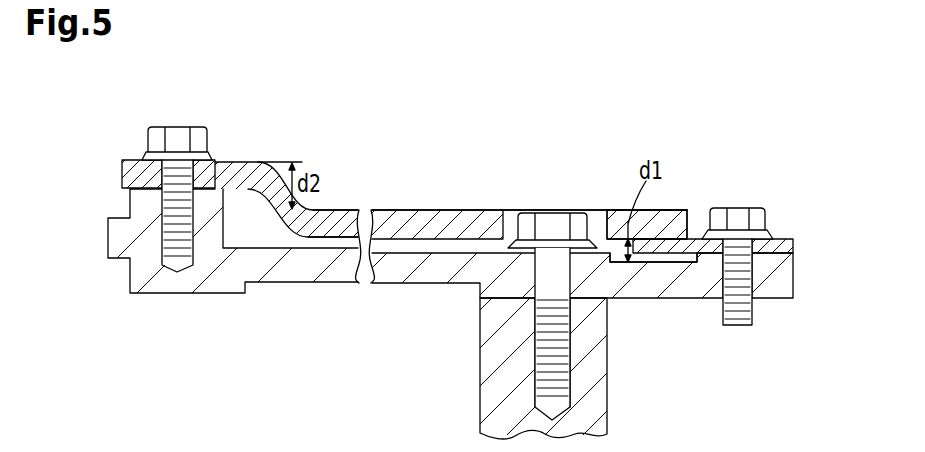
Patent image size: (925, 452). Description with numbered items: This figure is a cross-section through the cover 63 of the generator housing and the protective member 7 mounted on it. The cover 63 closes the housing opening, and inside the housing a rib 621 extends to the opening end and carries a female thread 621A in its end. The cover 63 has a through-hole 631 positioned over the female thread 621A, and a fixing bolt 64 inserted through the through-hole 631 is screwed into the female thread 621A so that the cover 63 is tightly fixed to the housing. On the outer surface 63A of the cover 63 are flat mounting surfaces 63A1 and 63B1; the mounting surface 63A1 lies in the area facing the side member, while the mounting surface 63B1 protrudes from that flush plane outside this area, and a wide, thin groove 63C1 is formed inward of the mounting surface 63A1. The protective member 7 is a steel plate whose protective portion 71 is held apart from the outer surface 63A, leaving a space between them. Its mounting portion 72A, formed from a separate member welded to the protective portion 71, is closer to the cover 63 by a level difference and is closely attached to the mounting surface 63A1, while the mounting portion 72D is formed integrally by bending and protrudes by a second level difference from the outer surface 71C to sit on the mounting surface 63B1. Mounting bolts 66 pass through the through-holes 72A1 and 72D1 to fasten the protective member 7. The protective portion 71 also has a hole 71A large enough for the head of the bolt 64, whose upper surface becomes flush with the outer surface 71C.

The protective member 7 is at (467, 176).
The cover 63 is at (318, 270).
The outer surface 63A is at (332, 211).
The mounting surface 63A1 is at (778, 240).
The mounting surface 63B1 is at (215, 161).
The groove 63C1 is at (612, 256).
The bolt 64 is at (548, 227).
The bolt 66 is at (181, 143).
The protective portion 71 is at (418, 211).
The hole 71A is at (508, 211).
The outer surface 71C is at (385, 211).
The mounting portion 72A is at (697, 239).
The through-hole 72A1 is at (754, 272).
The mounting portion 72D is at (130, 170).
The through-hole 72D1 is at (167, 189).
The rib 621 is at (594, 395).
The female thread 621A is at (571, 356).
The through-hole 631 is at (528, 312).